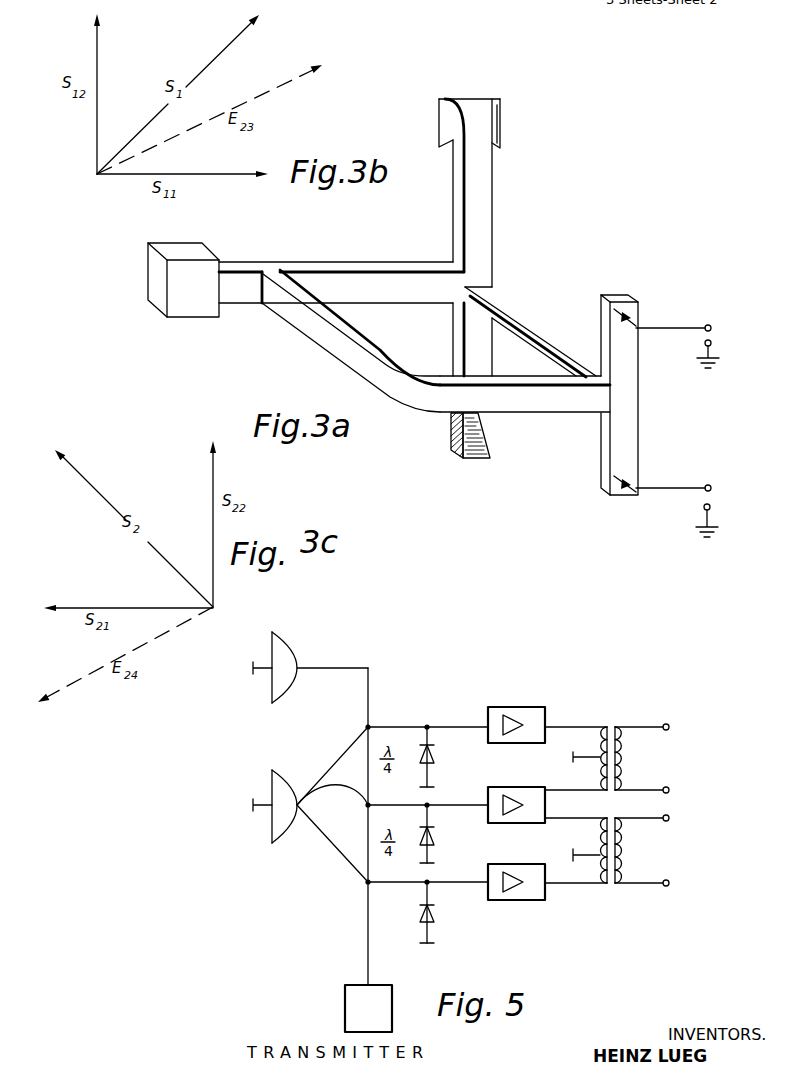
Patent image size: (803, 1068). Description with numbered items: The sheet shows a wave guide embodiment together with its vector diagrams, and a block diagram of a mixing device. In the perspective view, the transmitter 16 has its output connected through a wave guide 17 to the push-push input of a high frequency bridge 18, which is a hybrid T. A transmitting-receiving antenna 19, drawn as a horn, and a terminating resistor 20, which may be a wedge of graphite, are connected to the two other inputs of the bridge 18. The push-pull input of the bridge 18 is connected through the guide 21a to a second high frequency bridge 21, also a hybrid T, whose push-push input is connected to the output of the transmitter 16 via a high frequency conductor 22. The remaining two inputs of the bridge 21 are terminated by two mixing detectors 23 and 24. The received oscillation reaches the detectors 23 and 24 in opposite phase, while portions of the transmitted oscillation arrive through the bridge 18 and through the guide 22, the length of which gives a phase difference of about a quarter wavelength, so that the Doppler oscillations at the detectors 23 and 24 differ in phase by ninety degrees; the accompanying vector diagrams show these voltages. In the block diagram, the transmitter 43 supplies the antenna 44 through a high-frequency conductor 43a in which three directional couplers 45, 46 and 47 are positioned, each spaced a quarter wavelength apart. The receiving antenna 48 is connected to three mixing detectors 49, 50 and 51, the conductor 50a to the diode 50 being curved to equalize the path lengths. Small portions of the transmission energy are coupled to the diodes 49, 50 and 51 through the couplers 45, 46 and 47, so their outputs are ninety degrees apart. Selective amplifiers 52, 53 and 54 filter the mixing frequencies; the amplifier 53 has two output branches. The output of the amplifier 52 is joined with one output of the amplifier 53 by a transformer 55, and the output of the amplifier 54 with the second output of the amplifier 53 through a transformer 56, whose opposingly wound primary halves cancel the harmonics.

In FIG. 3A, the transmitter 16 is at (183, 280).
In FIG. 3A, the wave guide 17 is at (341, 337).
In FIG. 3A, the high frequency bridge 18 is at (481, 281).
In FIG. 3A, the transmitting-receiving antenna 19 is at (485, 107).
In FIG. 3A, the terminating resistor 20 is at (466, 458).
In FIG. 3A, the high frequency bridge 21 is at (630, 405).
In FIG. 3A, the guide 21a is at (538, 323).
In FIG. 3A, the high frequency conductor 22 is at (525, 394).
In FIG. 3A, the mixing detector 23 is at (630, 316).
In FIG. 3A, the mixing detector 24 is at (628, 486).
In FIG. 5, the transmitter 43 is at (370, 1041).
In FIG. 5, the high-frequency conductor 43a is at (370, 695).
In FIG. 5, the antenna 44 is at (297, 666).
In FIG. 5, the directional coupler 45 is at (411, 723).
In FIG. 5, the directional coupler 46 is at (414, 814).
In FIG. 5, the directional coupler 47 is at (411, 890).
In FIG. 5, the receiving antenna 48 is at (300, 772).
In FIG. 5, the detector 49 is at (447, 757).
In FIG. 5, the detector 50 is at (444, 834).
In FIG. 5, the conductor 50a is at (352, 779).
In FIG. 5, the detector 51 is at (445, 912).
In FIG. 5, the selective amplifier 52 is at (547, 716).
In FIG. 5, the selective amplifier 53 is at (518, 784).
In FIG. 5, the selective amplifier 54 is at (555, 852).
In FIG. 5, the transformer 55 is at (612, 724).
In FIG. 5, the transformer 56 is at (608, 883).